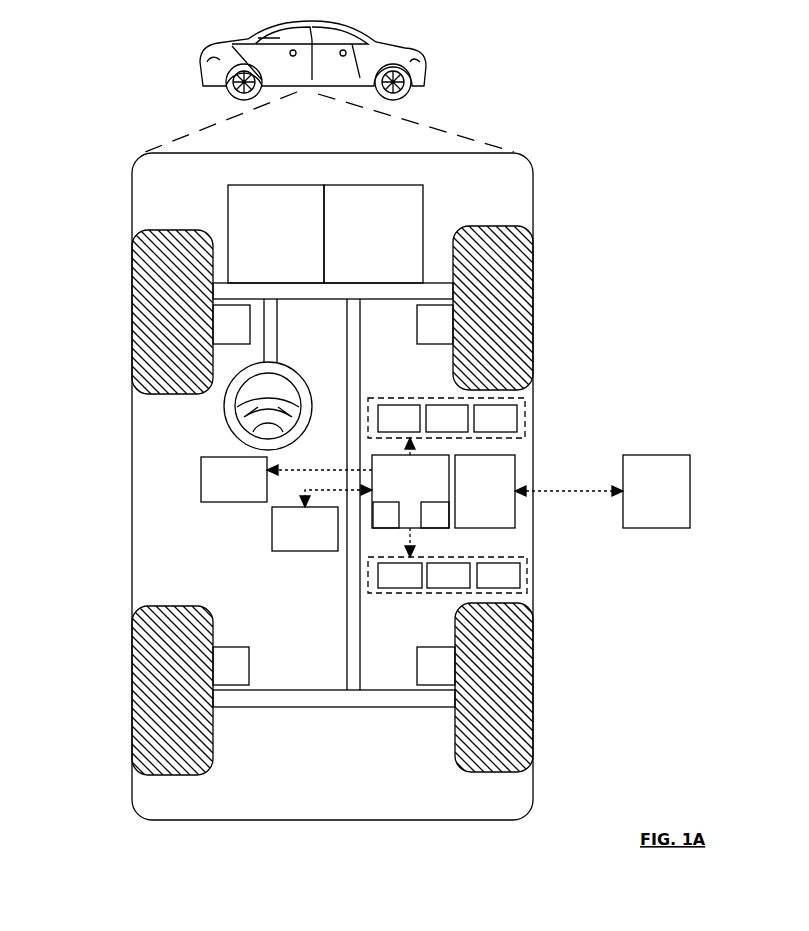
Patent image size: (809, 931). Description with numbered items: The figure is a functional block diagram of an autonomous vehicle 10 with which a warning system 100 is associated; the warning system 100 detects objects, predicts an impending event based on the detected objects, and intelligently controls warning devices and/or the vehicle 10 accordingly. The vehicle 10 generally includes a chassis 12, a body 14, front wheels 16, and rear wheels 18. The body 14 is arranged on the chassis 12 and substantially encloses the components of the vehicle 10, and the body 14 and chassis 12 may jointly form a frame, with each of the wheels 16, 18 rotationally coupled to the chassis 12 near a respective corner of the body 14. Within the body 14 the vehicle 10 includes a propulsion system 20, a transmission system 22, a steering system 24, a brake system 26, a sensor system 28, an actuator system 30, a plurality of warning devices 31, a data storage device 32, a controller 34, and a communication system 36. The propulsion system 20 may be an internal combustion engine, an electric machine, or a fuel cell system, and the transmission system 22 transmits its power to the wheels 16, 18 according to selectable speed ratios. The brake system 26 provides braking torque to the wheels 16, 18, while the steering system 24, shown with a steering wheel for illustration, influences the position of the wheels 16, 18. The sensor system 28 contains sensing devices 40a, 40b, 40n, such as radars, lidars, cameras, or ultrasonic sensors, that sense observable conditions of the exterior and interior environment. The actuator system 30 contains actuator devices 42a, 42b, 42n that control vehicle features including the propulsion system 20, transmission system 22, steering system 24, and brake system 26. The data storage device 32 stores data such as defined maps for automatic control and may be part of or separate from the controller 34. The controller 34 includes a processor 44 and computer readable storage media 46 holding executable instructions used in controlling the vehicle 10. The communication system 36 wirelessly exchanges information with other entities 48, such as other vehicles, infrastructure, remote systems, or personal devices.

The vehicle 10 is at (202, 70).
The warning system 100 is at (551, 166).
The chassis 12 is at (347, 633).
The body 14 is at (131, 471).
The front wheels 16 is at (173, 230).
The rear wheels 18 is at (188, 775).
The propulsion system 20 is at (276, 234).
The transmission system 22 is at (373, 234).
The steering system 24 is at (292, 318).
The brake system 26 is at (334, 495).
The sensor system 28 is at (446, 397).
The actuator system 30 is at (447, 596).
The warning devices 31 is at (234, 479).
The data storage device 32 is at (305, 529).
The controller 34 is at (410, 491).
The communication system 36 is at (485, 491).
The sensing device 40a is at (399, 418).
The sensing device 40b is at (447, 418).
The sensing device 40n is at (495, 418).
The actuator device 42a is at (400, 575).
The actuator device 42b is at (448, 575).
The actuator device 42n is at (498, 575).
The processor 44 is at (386, 515).
The computer readable storage device or media 46 is at (435, 515).
The other entities 48 is at (656, 491).